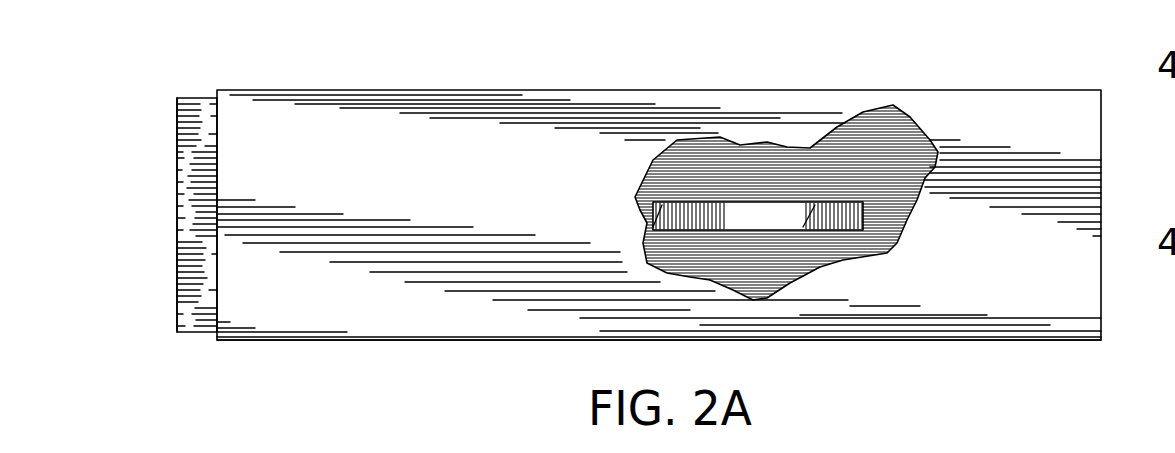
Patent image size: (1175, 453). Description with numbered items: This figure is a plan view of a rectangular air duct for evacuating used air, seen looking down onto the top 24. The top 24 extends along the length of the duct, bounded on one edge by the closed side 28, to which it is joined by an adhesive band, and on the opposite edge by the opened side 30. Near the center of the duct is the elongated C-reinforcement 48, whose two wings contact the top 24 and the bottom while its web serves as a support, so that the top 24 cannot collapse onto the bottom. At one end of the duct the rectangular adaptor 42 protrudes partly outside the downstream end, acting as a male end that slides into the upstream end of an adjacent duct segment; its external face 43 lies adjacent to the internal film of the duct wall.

The top 24 is at (388, 143).
The closed side 28 is at (815, 90).
The opened side 30 is at (1036, 340).
The rectangular adaptor 42 is at (193, 113).
The external face 43 is at (172, 238).
The C-reinforcement 48 is at (744, 218).